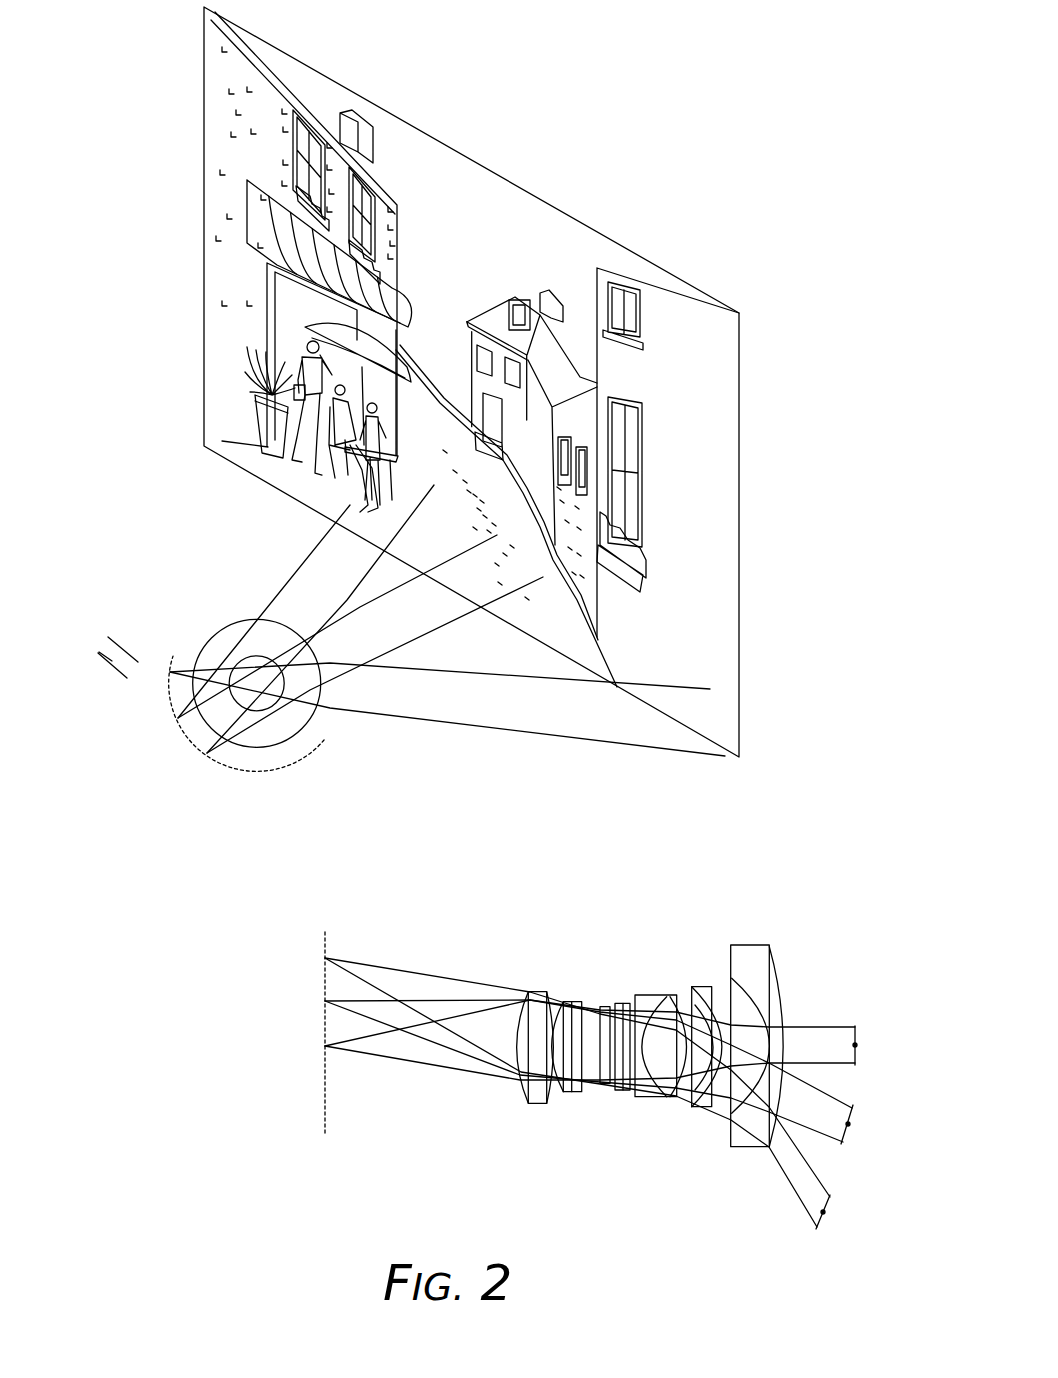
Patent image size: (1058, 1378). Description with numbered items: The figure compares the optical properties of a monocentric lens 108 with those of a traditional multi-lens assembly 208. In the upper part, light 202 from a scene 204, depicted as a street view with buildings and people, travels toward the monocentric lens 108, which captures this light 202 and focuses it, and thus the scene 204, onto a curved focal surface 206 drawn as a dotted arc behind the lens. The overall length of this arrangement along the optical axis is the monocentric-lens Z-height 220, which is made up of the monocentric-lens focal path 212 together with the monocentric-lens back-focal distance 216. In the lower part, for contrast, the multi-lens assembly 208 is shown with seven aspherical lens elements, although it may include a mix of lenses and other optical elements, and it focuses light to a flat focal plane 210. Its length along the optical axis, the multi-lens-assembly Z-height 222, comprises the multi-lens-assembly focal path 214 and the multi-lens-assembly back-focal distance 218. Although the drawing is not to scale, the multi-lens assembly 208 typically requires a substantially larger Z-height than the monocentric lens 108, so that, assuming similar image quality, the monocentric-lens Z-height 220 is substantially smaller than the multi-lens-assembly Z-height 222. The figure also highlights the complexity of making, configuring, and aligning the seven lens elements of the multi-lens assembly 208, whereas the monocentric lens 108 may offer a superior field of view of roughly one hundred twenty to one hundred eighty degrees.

The monocentric lens 108 is at (312, 715).
The light 202 is at (305, 562).
The scene 204 is at (508, 180).
The curved focal surface 206 is at (287, 763).
The multi-lens assembly 208 is at (630, 1130).
The flat focal plane 210 is at (323, 1100).
The monocentric-lens focal path 212 is at (223, 588).
The multi-lens-assembly focal path 214 is at (782, 1188).
The monocentric-lens back-focal distance 216 is at (104, 665).
The multi-lens-assembly back-focal distance 218 is at (533, 1188).
The monocentric-lens Z-height 220 is at (169, 542).
The multi-lens-assembly Z-height 222 is at (785, 903).